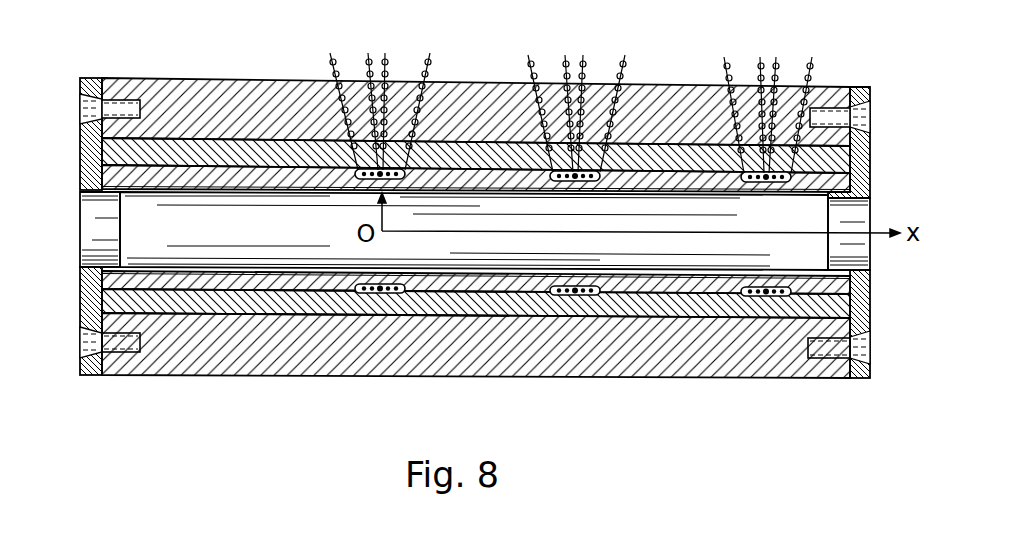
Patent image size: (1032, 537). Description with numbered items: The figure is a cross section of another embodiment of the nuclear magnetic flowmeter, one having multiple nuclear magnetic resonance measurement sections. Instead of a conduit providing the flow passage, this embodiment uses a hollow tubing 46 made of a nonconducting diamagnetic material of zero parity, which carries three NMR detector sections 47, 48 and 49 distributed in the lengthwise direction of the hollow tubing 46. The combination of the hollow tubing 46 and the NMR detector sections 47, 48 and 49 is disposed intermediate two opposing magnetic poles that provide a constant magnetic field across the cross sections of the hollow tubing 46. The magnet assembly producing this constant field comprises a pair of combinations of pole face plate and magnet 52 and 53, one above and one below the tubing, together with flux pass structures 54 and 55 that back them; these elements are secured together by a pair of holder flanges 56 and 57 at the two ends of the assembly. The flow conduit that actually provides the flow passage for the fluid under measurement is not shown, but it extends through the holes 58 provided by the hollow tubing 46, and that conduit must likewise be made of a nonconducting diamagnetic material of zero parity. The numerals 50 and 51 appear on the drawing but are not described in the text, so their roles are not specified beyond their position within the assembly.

The hollow tubing 46 is at (218, 177).
The NMR detector section 47 is at (385, 288).
The NMR detector section 48 is at (573, 288).
The NMR detector section 49 is at (767, 290).
The upper coil support band 50 is at (492, 172).
The lower coil support band 51 is at (498, 293).
The pole face plate and magnet 52 is at (437, 143).
The pole face plate and magnet 53 is at (420, 300).
The flux pass structure 54 is at (260, 110).
The flux pass structure 55 is at (185, 338).
The holder flange 56 is at (80, 368).
The holder flange 57 is at (870, 310).
The hole 58 is at (767, 193).